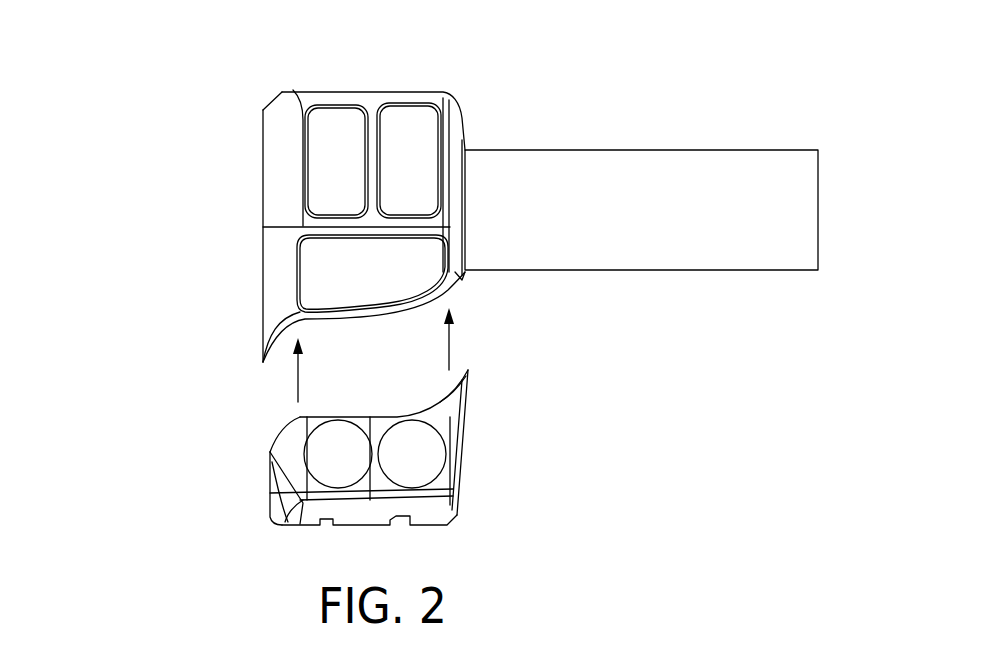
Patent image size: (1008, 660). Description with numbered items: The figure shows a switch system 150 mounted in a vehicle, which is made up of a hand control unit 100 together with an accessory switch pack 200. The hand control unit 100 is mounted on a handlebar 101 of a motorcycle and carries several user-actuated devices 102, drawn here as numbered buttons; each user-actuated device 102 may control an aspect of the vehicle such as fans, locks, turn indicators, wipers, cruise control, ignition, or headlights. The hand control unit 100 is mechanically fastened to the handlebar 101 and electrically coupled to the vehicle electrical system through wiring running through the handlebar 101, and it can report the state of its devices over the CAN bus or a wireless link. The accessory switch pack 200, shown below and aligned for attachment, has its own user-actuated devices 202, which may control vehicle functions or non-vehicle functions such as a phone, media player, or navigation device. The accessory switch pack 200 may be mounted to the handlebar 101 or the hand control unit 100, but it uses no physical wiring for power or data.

The switch system 150 is at (134, 147).
The hand control unit 100 is at (263, 126).
The user-actuated devices 102 is at (360, 108).
The handlebar 101 is at (615, 270).
The accessory switch pack 200 is at (270, 463).
The user-actuated devices 202 is at (338, 478).